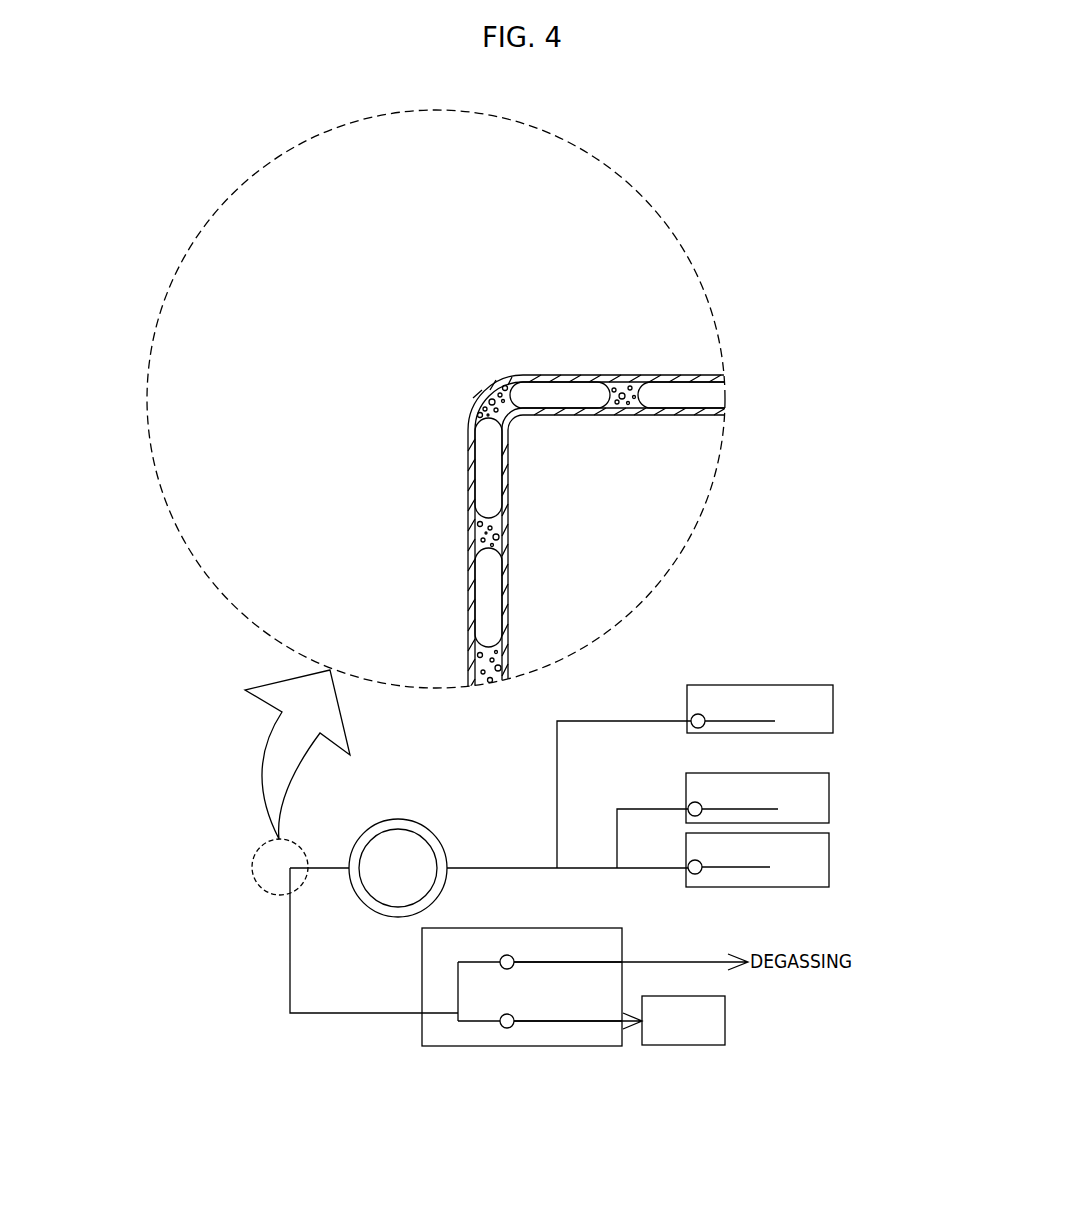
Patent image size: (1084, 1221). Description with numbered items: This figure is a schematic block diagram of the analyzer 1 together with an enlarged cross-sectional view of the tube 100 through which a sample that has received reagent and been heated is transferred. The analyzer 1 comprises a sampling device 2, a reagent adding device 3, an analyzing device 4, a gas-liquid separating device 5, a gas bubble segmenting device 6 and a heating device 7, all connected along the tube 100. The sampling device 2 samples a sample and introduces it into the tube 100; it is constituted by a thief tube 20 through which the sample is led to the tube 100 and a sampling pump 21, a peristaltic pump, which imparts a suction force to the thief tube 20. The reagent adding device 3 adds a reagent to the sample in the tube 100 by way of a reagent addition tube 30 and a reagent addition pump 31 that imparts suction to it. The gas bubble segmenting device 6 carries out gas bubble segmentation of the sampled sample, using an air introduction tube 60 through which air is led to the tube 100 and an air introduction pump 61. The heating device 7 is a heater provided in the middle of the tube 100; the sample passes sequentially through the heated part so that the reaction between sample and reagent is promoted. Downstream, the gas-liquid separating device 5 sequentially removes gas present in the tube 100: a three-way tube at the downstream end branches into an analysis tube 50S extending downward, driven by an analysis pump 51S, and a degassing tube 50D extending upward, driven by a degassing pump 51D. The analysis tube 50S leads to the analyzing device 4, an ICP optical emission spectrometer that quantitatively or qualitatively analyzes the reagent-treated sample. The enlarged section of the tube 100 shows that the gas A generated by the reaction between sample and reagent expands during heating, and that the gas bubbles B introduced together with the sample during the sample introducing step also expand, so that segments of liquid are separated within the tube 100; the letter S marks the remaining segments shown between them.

The analyzer 1 is at (795, 597).
The tube 100 is at (533, 376).
The sampling device 2 is at (831, 841).
The thief tube 20 is at (733, 864).
The sampling pump 21 is at (704, 863).
The reagent adding device 3 is at (834, 693).
The reagent addition tube 30 is at (735, 719).
The reagent addition pump 31 is at (706, 718).
The gas bubble segmenting device 6 is at (831, 781).
The air introduction tube 60 is at (730, 808).
The air introduction pump 61 is at (702, 807).
The heating device 7 is at (412, 818).
The gas-liquid separating device 5 is at (623, 936).
The degassing pump 51D is at (514, 960).
The degassing tube 50D is at (566, 961).
The analysis pump 51S is at (514, 1019).
The analysis tube 50S is at (553, 1020).
The analyzing device 4 is at (660, 994).
The gas A is at (492, 409).
The gas bubbles B is at (482, 482).
The segment boundary S is at (508, 533).